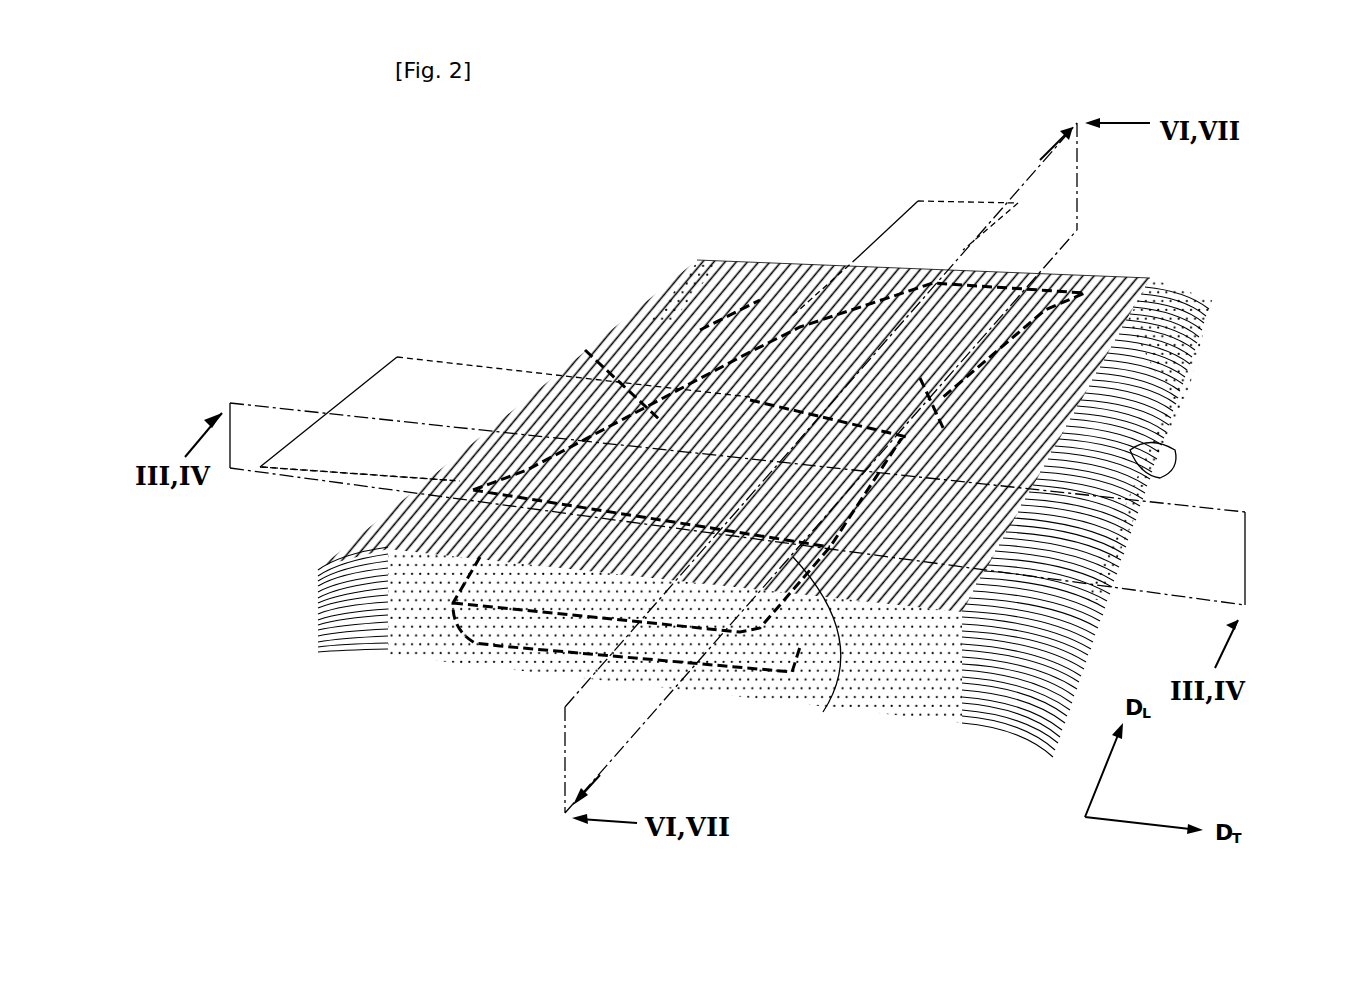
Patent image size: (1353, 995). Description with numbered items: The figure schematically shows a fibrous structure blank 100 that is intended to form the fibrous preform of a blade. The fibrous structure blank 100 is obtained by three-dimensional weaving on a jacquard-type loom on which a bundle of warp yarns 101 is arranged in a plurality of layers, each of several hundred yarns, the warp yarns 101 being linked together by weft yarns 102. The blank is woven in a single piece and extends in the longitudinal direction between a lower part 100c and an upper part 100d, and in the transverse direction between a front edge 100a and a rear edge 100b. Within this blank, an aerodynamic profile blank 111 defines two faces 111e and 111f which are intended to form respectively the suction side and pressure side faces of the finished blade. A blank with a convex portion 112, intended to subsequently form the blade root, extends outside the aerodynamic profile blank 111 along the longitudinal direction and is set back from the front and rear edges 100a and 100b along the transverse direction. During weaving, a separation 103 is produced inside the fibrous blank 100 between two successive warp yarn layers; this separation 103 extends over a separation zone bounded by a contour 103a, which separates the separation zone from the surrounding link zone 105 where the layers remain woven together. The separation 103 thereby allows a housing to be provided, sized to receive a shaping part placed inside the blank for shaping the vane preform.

The fibrous structure blank 100 is at (827, 465).
The front edge 100a is at (632, 313).
The rear edge 100b is at (1165, 392).
The lower part 100c is at (542, 668).
The upper part 100d is at (1060, 282).
The warp yarns 101 is at (811, 698).
The weft yarns 102 is at (1135, 452).
The separation 103 is at (330, 408).
The contour 103a is at (490, 453).
The link zone 105 is at (590, 350).
The aerodynamic profile blank 111 is at (833, 357).
The face 111e is at (733, 268).
The face 111f is at (950, 430).
The blank with a convex portion 112 is at (388, 648).